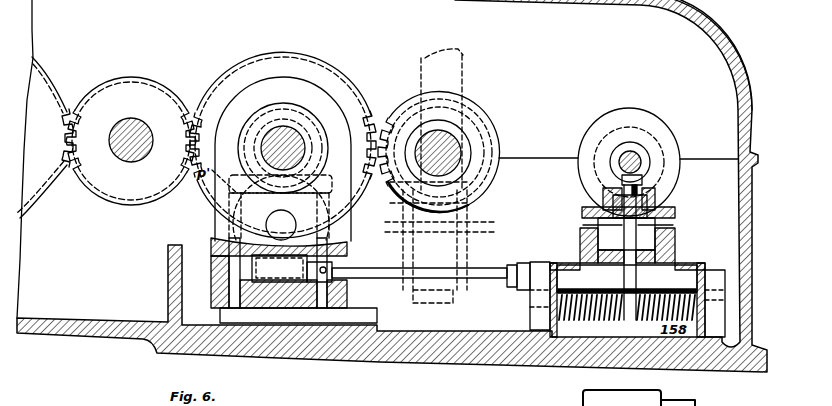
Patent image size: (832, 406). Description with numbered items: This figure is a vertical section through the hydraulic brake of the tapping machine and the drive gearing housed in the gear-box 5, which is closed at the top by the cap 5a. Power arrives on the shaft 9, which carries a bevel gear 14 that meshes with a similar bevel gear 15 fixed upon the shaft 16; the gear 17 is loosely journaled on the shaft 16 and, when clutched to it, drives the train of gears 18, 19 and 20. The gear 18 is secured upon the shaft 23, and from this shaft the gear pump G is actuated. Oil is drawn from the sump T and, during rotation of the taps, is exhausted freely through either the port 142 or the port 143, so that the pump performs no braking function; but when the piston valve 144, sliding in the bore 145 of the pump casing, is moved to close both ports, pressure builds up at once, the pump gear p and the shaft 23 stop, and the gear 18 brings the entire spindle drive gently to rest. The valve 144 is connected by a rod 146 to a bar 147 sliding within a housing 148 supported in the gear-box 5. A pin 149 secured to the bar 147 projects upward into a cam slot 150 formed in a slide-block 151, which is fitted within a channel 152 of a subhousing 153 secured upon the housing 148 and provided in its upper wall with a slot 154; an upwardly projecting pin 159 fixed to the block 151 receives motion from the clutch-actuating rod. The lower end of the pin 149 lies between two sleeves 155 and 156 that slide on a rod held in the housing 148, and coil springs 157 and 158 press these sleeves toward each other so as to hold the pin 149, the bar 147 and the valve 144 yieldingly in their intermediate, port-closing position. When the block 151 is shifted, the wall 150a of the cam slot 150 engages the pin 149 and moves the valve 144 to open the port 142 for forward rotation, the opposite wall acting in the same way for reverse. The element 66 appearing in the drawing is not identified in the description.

The gear-box 5 is at (379, 361).
The cap of the gear-box 5a is at (641, 3).
The gear 20 is at (56, 83).
The gear 19 is at (160, 79).
The gear 18 is at (339, 74).
The gear pump G is at (232, 105).
The shaft 23 is at (308, 150).
The pump gear p is at (242, 145).
The shaft 9 is at (463, 86).
The bevel gear 15 is at (484, 118).
The gear 17 is at (490, 132).
The shaft 16 is at (460, 154).
The bevel gear 14 is at (481, 202).
The coil spring 158 is at (620, 145).
The shaft 66 is at (641, 160).
The slot 154 is at (648, 187).
The channel 152 is at (663, 195).
The pin 159 is at (620, 181).
The slide-block 151 is at (605, 205).
The subhousing 153 is at (675, 214).
The cam slot 150 is at (583, 222).
The wall of the cam-slot 150a is at (673, 225).
The housing 148 is at (680, 267).
The bar 147 is at (627, 279).
The pin 149 is at (659, 281).
The coil spring 157 is at (575, 316).
The sleeve 155 is at (606, 316).
The sleeve 156 is at (661, 316).
The bore 145 is at (218, 256).
The port 142 is at (234, 293).
The port 143 is at (325, 293).
The piston valve 144 is at (288, 276).
The rod 146 is at (507, 280).
The sump T is at (464, 327).